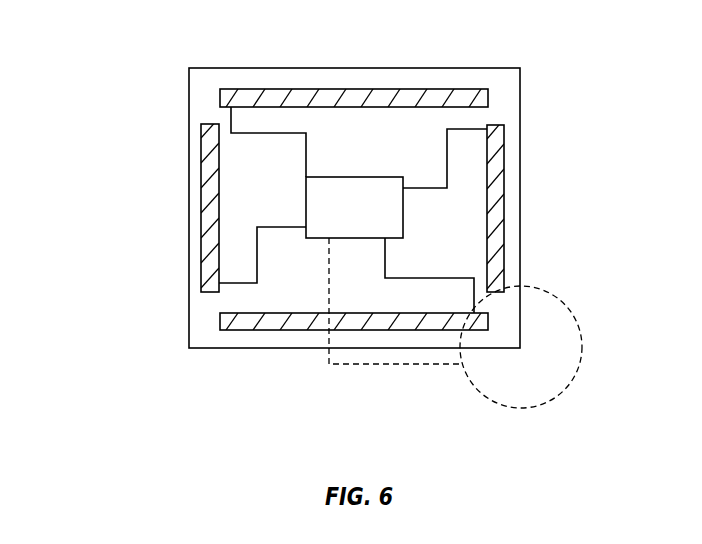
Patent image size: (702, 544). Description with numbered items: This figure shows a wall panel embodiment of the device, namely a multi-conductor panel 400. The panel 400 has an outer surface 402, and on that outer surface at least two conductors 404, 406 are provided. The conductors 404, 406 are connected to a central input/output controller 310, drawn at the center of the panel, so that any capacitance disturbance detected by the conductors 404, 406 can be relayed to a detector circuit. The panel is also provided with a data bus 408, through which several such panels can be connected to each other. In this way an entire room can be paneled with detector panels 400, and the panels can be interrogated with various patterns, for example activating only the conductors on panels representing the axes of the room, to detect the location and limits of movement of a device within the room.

The multi-conductor panel 400 is at (140, 78).
The outer surface 402 is at (326, 230).
The conductor 404 is at (537, 216).
The conductor 406 is at (364, 359).
The central input/output controller 310 is at (365, 185).
The data bus 408 is at (475, 326).